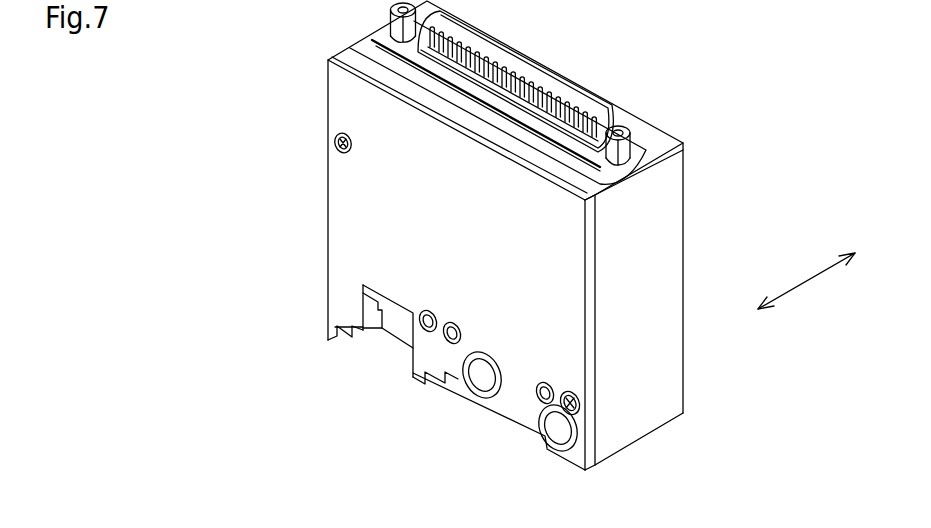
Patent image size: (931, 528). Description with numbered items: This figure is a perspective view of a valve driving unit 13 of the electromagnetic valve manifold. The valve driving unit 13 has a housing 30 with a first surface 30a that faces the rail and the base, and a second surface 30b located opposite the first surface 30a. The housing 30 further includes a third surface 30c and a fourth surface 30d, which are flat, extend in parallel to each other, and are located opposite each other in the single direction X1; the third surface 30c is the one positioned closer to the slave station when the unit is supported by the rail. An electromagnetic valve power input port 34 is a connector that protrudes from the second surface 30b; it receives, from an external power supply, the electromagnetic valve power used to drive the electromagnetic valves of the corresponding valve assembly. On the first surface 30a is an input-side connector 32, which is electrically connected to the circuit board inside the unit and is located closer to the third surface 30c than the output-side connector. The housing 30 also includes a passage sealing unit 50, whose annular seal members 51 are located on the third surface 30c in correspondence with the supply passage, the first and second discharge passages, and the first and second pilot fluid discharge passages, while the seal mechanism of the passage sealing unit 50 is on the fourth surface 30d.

The valve driving unit 13 is at (600, 98).
The electromagnetic valve power input port 34 is at (509, 62).
The housing 30 is at (684, 145).
The first surface 30a is at (641, 438).
The second surface 30b is at (641, 137).
The third surface 30c is at (381, 268).
The fourth surface 30d is at (684, 227).
The input-side connector 32 is at (398, 333).
The passage sealing unit 50 is at (503, 348).
The annular seal members 51 is at (452, 344).
The single direction X1 is at (805, 283).